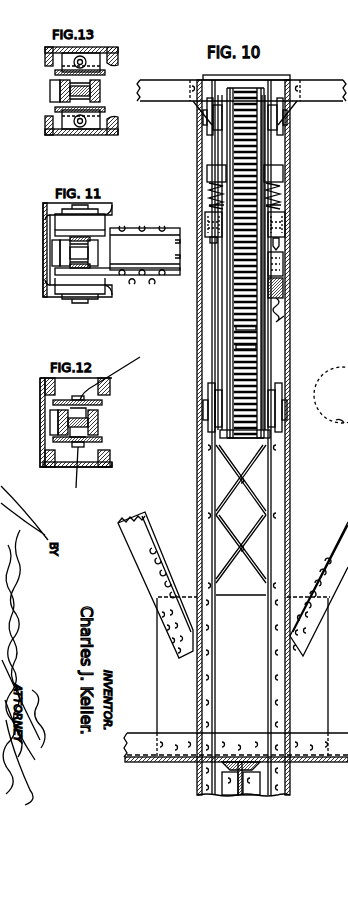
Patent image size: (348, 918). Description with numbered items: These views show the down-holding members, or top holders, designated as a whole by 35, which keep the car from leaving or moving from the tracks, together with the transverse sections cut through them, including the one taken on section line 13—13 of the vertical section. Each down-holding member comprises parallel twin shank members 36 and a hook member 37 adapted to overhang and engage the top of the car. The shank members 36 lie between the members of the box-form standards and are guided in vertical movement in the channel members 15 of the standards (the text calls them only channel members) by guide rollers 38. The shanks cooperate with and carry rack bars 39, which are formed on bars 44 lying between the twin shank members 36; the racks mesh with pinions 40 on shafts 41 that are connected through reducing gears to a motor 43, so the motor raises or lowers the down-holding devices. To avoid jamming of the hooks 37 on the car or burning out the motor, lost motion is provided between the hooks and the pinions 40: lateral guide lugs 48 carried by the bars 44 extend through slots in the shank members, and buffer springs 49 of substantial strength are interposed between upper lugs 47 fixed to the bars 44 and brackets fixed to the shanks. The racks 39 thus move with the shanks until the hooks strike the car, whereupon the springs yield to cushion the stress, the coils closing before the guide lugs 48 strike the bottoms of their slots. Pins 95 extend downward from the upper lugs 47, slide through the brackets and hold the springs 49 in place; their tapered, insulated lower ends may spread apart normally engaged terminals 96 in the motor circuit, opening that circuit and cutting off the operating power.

In FIG. 10, the section line 13 is at (187, 204).
In FIG. 13, the channel frame member 15 is at (113, 51).
In FIG. 11, the channel frame member 15 is at (48, 210).
In FIG. 12, the channel frame member 15 is at (44, 378).
In FIG. 11, the down-holding members 35 is at (145, 249).
In FIG. 13, the shank members 36 is at (55, 72).
In FIG. 11, the shank members 36 is at (55, 233).
In FIG. 12, the shank members 36 is at (104, 440).
In FIG. 11, the hook members 37 is at (150, 286).
In FIG. 11, the guide rollers 38 is at (95, 215).
In FIG. 10, the guide rollers 38 is at (205, 128).
In FIG. 13, the rack bars 39 is at (50, 91).
In FIG. 11, the rack bars 39 is at (52, 253).
In FIG. 12, the rack bars 39 is at (50, 422).
In FIG. 10, the rack bars 39 is at (250, 328).
In FIG. 10, the pinions 40 is at (342, 420).
In FIG. 10, the shafts 41 is at (345, 395).
In FIG. 10, the motor 43 is at (284, 316).
In FIG. 13, the bars 44 is at (100, 91).
In FIG. 11, the bars 44 is at (85, 245).
In FIG. 12, the bars 44 is at (95, 418).
In FIG. 10, the bars 44 is at (250, 347).
In FIG. 10, the upper lugs 47 is at (283, 175).
In FIG. 12, the lateral guide lugs 48 is at (114, 422).
In FIG. 13, the buffer springs 49 is at (90, 62).
In FIG. 10, the buffer springs 49 is at (208, 185).
In FIG. 10, the pins 95 is at (280, 243).
In FIG. 10, the terminals 96 is at (284, 262).